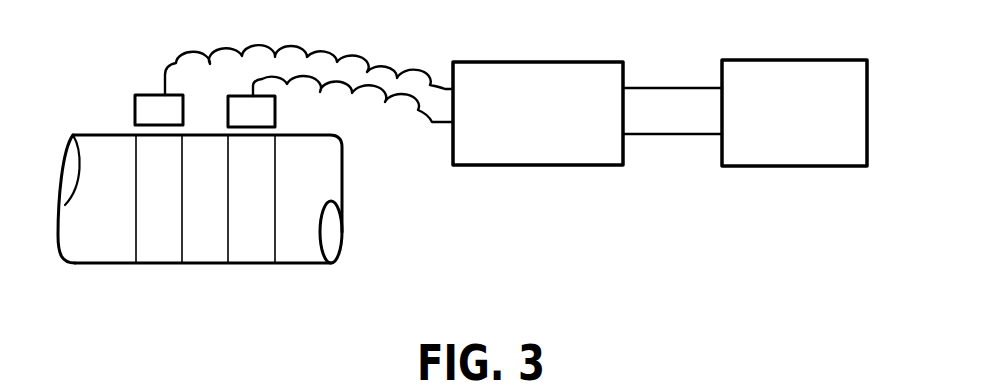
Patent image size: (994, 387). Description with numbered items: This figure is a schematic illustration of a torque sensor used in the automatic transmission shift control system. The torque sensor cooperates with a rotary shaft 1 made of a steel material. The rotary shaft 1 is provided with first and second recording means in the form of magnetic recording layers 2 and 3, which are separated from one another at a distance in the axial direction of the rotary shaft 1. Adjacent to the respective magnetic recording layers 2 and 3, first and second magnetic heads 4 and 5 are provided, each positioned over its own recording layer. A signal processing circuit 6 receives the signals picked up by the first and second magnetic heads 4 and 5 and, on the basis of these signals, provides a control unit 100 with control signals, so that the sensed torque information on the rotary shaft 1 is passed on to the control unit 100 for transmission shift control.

The rotary shaft 1 is at (312, 235).
The first magnetic recording layer 2 is at (162, 250).
The second magnetic recording layer 3 is at (255, 250).
The first magnetic head 4 is at (133, 105).
The second magnetic head 5 is at (275, 110).
The signal processing circuit 6 is at (572, 167).
The control unit 100 is at (815, 168).